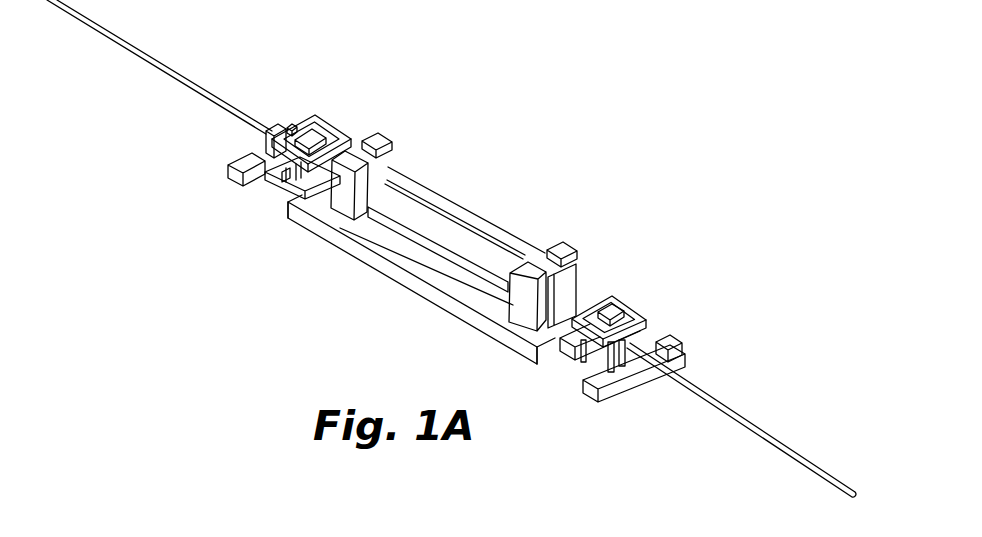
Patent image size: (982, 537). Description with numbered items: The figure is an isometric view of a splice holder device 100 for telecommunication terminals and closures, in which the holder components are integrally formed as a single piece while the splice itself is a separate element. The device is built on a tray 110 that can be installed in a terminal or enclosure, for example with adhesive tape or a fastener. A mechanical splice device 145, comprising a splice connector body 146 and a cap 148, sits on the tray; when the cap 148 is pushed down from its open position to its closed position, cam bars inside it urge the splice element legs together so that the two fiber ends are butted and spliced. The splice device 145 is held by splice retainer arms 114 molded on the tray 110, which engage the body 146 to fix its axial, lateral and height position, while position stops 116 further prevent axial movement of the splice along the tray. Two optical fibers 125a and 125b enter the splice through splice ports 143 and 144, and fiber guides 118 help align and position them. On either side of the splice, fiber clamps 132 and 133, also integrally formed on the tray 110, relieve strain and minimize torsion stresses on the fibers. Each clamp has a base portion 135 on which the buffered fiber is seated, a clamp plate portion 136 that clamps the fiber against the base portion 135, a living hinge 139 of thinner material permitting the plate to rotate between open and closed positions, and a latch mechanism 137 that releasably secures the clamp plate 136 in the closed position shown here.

The splice holder device 100 is at (455, 65).
The tray 110 is at (403, 258).
The splice retainer arms 114 is at (363, 137).
The position stops 116 is at (300, 222).
The fiber guides 118 is at (267, 132).
The optical fiber 125a is at (760, 429).
The optical fiber 125b is at (153, 57).
The fiber clamp 132 is at (297, 108).
The fiber clamp 133 is at (646, 296).
The base portion 135 is at (292, 176).
The clamp plate portion 136 is at (297, 168).
The latch mechanism 137 is at (317, 117).
The living hinge 139 is at (253, 150).
The splice port 143 is at (292, 183).
The splice port 144 is at (562, 298).
The splice device 145 is at (446, 180).
The splice connector body 146 is at (533, 255).
The cap 148 is at (475, 217).